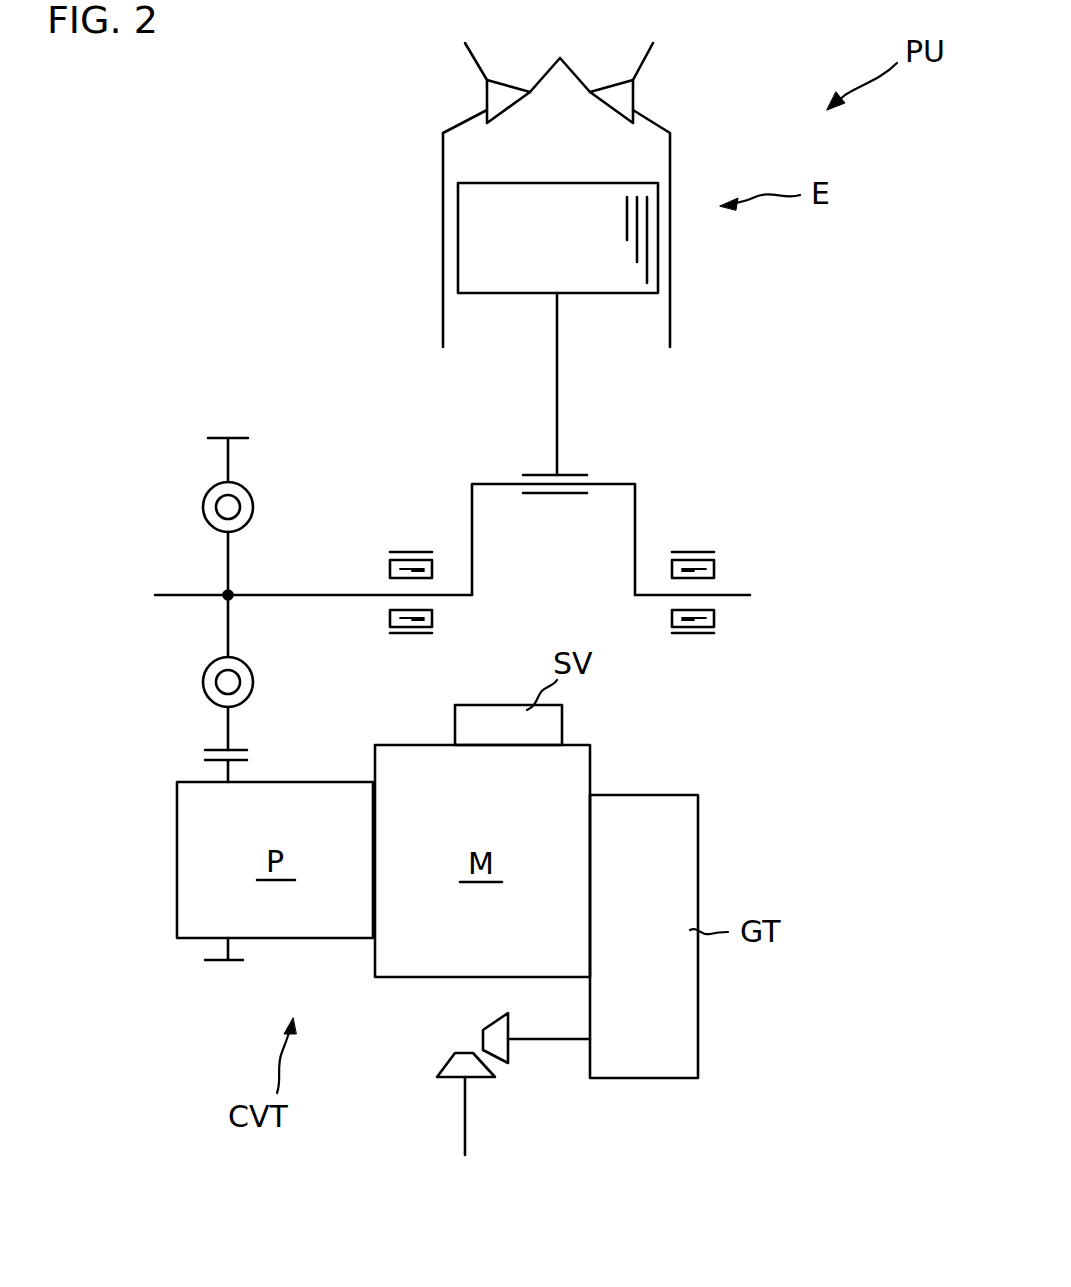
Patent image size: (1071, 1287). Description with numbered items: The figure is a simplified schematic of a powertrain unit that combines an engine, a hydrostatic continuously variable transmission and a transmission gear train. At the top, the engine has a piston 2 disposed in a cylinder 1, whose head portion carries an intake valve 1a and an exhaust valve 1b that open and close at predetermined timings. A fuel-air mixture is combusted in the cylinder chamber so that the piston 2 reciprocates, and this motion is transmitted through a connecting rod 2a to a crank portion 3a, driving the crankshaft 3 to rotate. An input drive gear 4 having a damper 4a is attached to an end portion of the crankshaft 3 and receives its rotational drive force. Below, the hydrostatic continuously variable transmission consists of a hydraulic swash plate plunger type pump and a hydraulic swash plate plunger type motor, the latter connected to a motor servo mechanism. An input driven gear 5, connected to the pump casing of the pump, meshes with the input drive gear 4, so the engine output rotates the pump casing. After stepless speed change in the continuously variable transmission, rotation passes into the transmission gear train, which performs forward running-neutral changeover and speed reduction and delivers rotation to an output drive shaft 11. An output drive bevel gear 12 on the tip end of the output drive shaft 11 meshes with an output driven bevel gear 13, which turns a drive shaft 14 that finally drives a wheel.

The cylinder 1 is at (670, 300).
The intake valve 1a is at (637, 62).
The exhaust valve 1b is at (480, 62).
The piston 2 is at (575, 257).
The connecting rod 2a is at (557, 370).
The crankshaft 3 is at (298, 595).
The crank portion 3a is at (608, 484).
The input drive gear 4 is at (240, 438).
The damper 4a is at (253, 500).
The input driven gear 5 is at (213, 960).
The output drive shaft 11 is at (548, 1040).
The output drive bevel gear 12 is at (490, 1025).
The output driven bevel gear 13 is at (447, 1070).
The drive shaft 14 is at (465, 1128).